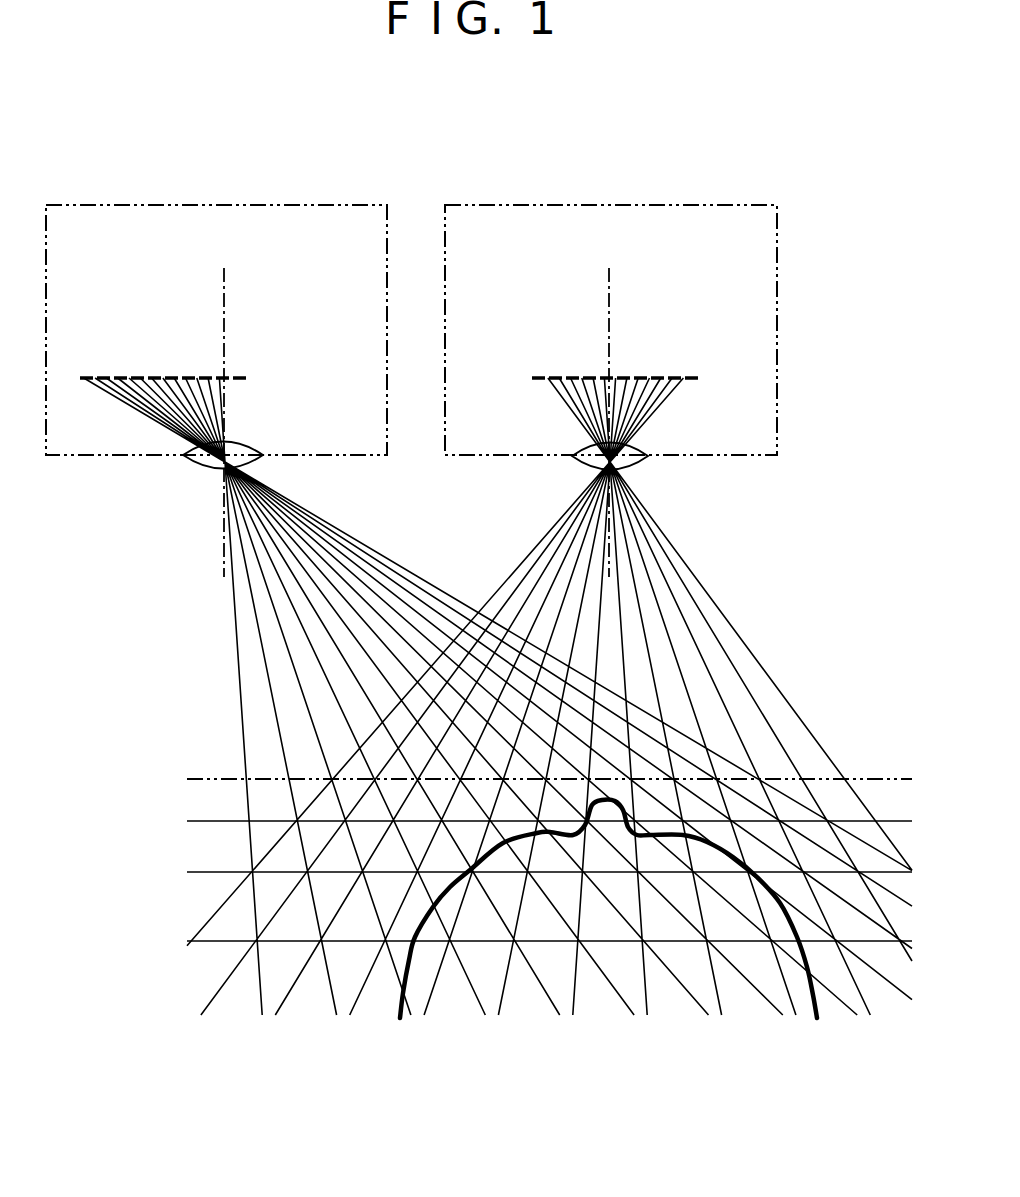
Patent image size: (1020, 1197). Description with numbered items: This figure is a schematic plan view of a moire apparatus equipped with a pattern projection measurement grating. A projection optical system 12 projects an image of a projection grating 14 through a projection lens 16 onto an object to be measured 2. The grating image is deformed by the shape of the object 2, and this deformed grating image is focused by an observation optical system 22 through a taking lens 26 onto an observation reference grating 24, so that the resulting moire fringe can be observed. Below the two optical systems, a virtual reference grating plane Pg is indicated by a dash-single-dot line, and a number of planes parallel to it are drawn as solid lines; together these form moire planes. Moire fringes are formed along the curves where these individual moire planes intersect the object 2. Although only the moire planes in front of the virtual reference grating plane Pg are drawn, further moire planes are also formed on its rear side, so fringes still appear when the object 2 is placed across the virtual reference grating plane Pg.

The projection optical system 12 is at (263, 205).
The observation optical system 22 is at (636, 205).
The projection grating 14 is at (155, 376).
The observation reference grating 24 is at (588, 376).
The projection lens 16 is at (210, 468).
The taking lens 26 is at (632, 468).
The virtual reference grating plane Pg is at (207, 778).
The object to be measured 2 is at (712, 830).